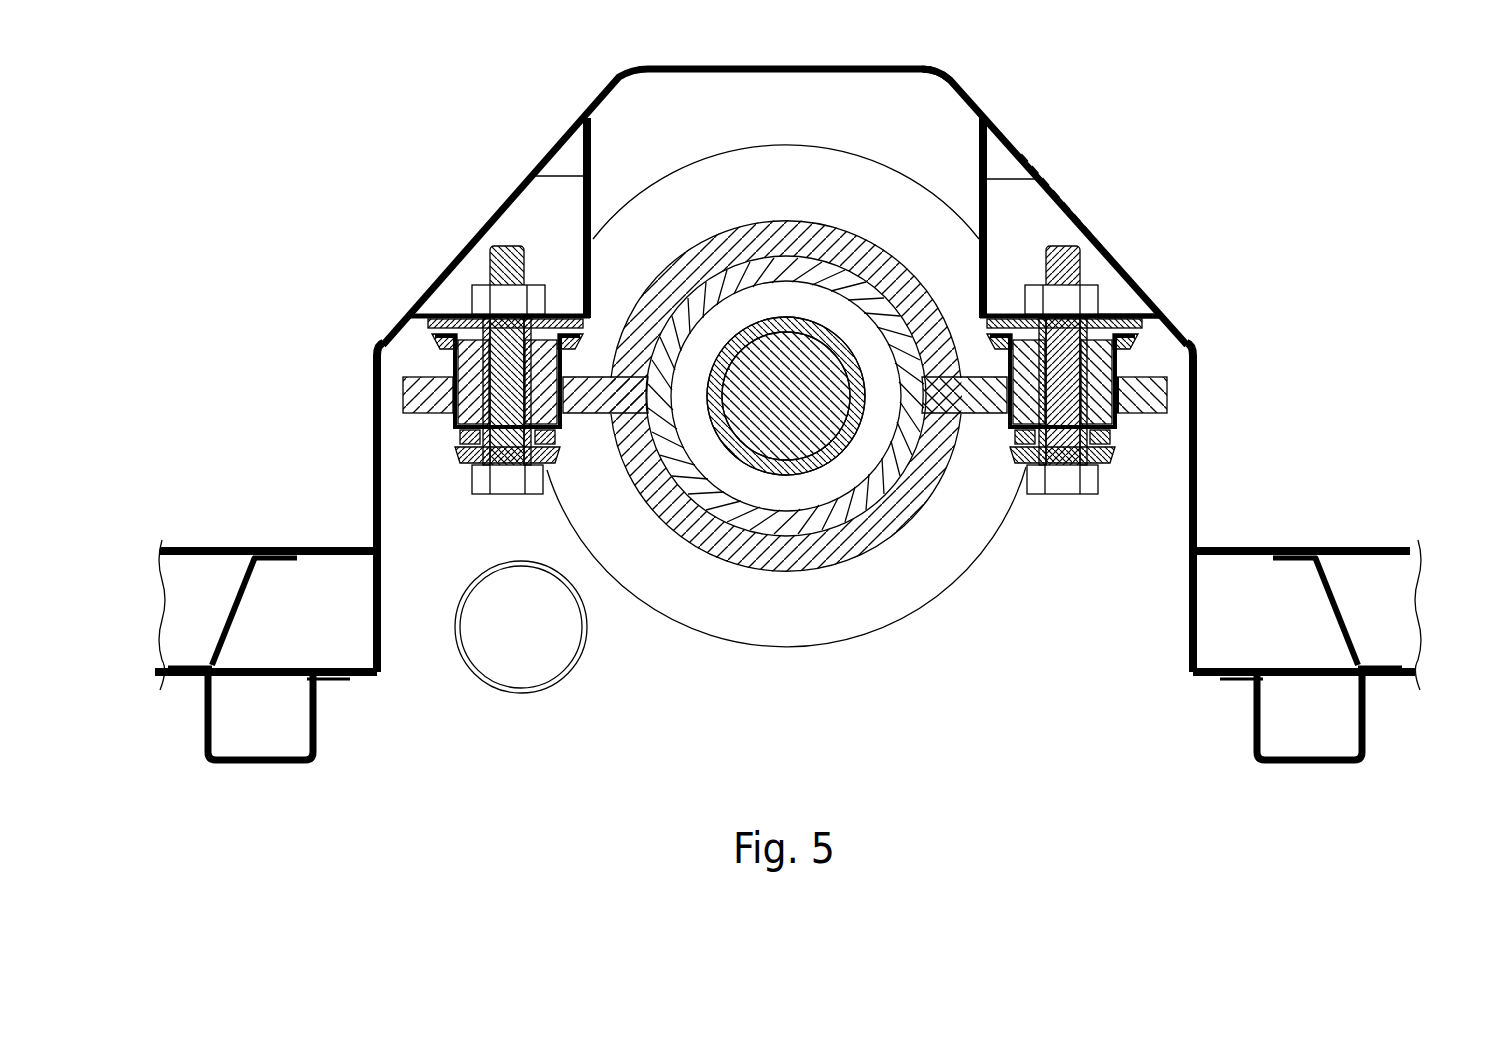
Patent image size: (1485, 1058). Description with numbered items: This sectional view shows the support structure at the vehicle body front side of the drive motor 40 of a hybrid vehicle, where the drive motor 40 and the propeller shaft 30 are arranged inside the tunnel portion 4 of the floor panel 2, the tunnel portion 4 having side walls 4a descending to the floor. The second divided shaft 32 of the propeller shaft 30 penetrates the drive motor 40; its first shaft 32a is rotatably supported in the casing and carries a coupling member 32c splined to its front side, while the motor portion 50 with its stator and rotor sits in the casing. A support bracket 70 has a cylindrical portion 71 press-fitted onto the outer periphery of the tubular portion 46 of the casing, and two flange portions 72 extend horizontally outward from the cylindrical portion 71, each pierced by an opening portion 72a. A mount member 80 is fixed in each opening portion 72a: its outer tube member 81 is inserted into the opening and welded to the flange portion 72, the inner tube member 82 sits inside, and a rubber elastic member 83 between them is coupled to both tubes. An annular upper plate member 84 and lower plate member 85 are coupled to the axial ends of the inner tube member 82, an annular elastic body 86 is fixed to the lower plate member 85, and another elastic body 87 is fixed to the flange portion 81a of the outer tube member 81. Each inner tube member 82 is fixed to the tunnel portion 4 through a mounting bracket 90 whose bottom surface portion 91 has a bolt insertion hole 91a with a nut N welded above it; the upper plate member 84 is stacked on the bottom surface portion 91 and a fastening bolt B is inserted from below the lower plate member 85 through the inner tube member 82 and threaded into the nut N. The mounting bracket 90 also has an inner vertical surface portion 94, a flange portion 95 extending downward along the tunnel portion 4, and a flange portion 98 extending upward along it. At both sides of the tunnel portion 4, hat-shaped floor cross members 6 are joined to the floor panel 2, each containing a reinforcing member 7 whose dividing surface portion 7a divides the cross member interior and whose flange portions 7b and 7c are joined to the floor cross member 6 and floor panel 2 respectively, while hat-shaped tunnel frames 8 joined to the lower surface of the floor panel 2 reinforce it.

The floor panel 2 is at (300, 668).
The tunnel portion 4 is at (767, 74).
The housing side wall 4a is at (379, 400).
The floor cross member 6 is at (256, 549).
The reinforcing member 7 is at (782, 589).
The dividing surface portion 7a is at (248, 585).
The flange portion 7b is at (276, 556).
The flange portion 7c is at (182, 670).
The tunnel frame 8 is at (258, 763).
The propeller shaft 30 is at (786, 484).
The second divided shaft 32 is at (762, 535).
The first shaft 32a is at (777, 358).
The coupling member 32c is at (826, 330).
The drive motor 40 is at (920, 612).
The tubular portion 46 is at (809, 484).
The motor portion 50 is at (521, 695).
The support bracket 70 is at (626, 510).
The cylindrical portion 71 is at (705, 563).
The flange portion 72 is at (428, 415).
The opening portion 72a is at (1125, 418).
The mount member 80 is at (430, 358).
The outer tube member 81 is at (1062, 381).
The flange portion 81a is at (1125, 341).
The inner tube member 82 is at (1062, 382).
The elastic member 83 is at (1063, 391).
The upper plate member 84 is at (1142, 320).
The lower plate member 85 is at (1062, 479).
The elastic body 86 is at (1062, 455).
The elastic body 87 is at (999, 341).
The mounting bracket 90 is at (518, 226).
The bottom surface portion 91 is at (998, 318).
The bolt insertion hole 91a is at (1082, 298).
The inner vertical surface portion 94 is at (985, 203).
The flange portion 95 is at (1184, 336).
The flange portion 98 is at (953, 105).
The fastening bolt B is at (1063, 369).
The nut N is at (1061, 299).